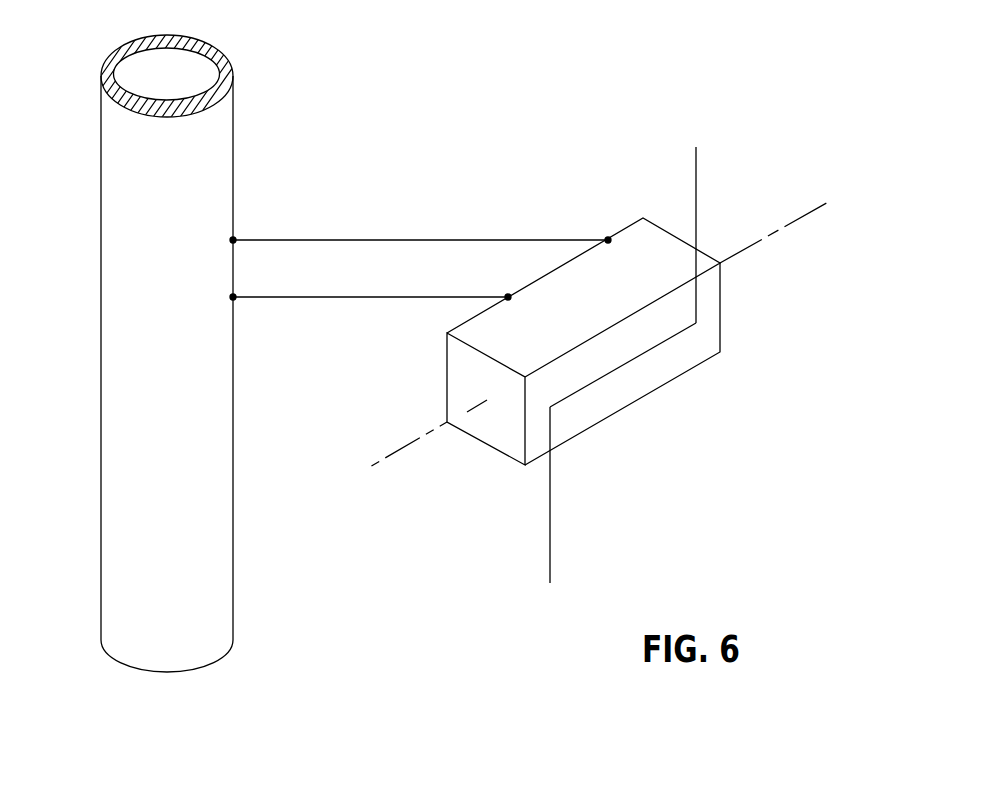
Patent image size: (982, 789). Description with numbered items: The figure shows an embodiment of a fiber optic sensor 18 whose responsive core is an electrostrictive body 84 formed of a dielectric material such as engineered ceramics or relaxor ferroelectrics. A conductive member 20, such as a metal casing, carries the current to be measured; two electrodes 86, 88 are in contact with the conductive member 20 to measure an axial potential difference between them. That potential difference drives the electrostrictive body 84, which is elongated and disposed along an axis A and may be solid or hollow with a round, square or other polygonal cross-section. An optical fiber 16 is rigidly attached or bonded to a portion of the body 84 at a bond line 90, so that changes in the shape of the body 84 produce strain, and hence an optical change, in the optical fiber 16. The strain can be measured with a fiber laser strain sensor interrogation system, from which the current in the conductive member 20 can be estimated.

The conductive member 20 is at (101, 182).
The electrode 88 is at (353, 240).
The electrode 86 is at (373, 297).
The electrostrictive body 84 is at (602, 422).
The bond line 90 is at (665, 342).
The optical fiber 16 is at (696, 193).
The axis A is at (812, 212).
The fiber optic sensor 18 is at (748, 295).